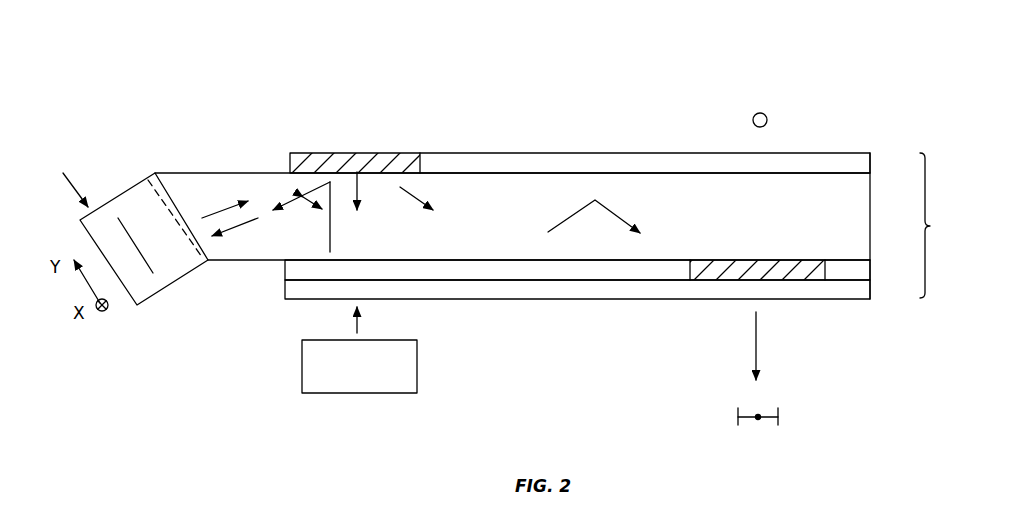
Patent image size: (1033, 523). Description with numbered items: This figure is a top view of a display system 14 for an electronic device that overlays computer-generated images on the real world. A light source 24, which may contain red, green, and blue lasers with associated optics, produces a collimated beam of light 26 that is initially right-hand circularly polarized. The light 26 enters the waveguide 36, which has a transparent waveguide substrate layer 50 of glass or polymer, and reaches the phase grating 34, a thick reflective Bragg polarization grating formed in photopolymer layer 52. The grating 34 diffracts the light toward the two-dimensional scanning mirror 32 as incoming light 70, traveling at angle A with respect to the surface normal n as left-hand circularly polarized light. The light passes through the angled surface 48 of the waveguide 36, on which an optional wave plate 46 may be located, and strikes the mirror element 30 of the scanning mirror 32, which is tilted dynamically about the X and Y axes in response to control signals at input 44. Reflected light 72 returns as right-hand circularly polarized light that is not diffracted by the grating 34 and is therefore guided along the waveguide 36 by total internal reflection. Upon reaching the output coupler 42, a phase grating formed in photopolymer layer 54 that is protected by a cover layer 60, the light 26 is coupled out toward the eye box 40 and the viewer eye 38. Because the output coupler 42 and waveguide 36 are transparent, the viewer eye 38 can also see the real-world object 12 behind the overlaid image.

The display system 14 is at (688, 65).
The real-world object 12 is at (768, 118).
The waveguide 36 is at (936, 225).
The photopolymer layer 52 is at (878, 153).
The phase grating 34 is at (358, 163).
The waveguide substrate layer 50 is at (860, 215).
The photopolymer layer 54 is at (878, 260).
The output coupler 42 is at (715, 274).
The cover layer 60 is at (620, 290).
The two-dimensional scanning mirror 32 is at (127, 295).
The angled surface 48 is at (205, 259).
The wave plate 46 is at (154, 173).
The mirror element 30 is at (153, 266).
The input 44 is at (72, 190).
The reflected light 72 is at (202, 217).
The incoming light 70 is at (255, 217).
The light 26 is at (328, 237).
The light source 24 is at (418, 363).
The eye box 40 is at (780, 420).
The viewer eye 38 is at (758, 421).